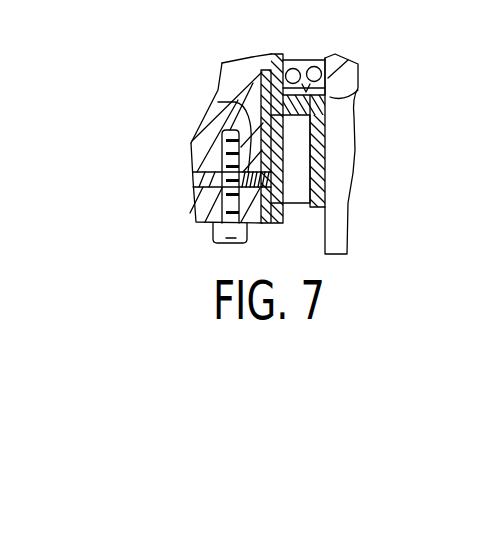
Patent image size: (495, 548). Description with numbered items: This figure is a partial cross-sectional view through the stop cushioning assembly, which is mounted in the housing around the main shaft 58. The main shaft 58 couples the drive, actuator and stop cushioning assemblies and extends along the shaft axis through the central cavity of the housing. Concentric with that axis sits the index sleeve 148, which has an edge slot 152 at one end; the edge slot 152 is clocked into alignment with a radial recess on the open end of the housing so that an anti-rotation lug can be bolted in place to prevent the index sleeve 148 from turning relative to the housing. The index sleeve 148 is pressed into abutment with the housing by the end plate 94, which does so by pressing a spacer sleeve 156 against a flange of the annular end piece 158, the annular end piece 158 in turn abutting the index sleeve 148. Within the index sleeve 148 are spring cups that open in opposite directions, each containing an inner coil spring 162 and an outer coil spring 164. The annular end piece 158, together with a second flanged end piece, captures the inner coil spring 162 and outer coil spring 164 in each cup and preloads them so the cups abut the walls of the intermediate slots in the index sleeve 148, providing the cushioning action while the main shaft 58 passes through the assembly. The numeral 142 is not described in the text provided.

The main shaft 58 is at (347, 86).
The end plate 94 is at (194, 220).
The bearing carrier 142 is at (292, 199).
The index sleeve 148 is at (278, 60).
The edge slot 152 is at (218, 101).
The spacer sleeve 156 is at (197, 173).
The annular end piece 158 is at (320, 208).
The inner coil spring 162 is at (298, 67).
The outer coil spring 164 is at (324, 62).